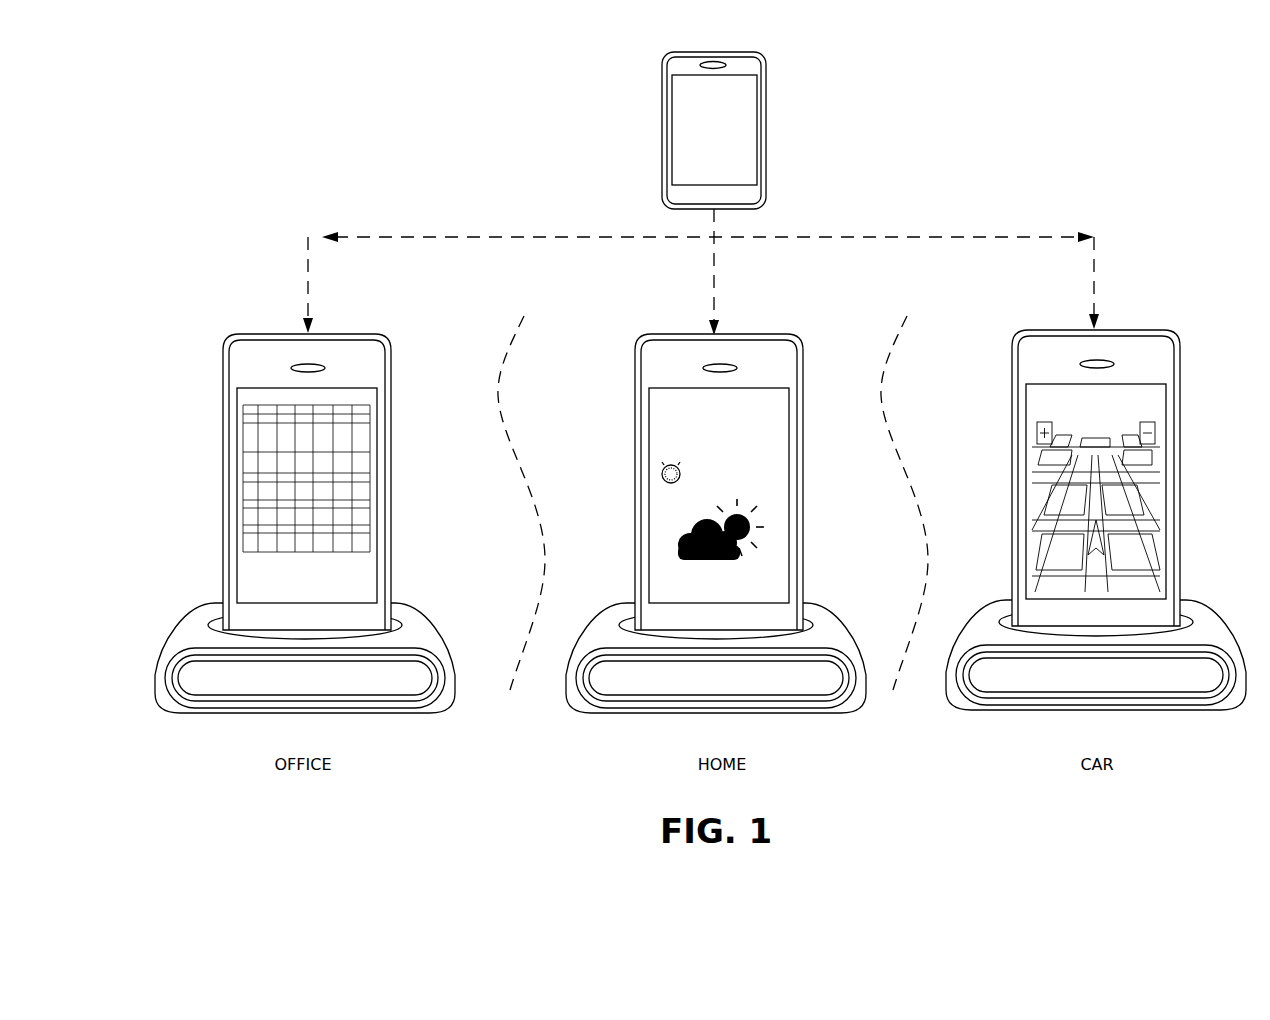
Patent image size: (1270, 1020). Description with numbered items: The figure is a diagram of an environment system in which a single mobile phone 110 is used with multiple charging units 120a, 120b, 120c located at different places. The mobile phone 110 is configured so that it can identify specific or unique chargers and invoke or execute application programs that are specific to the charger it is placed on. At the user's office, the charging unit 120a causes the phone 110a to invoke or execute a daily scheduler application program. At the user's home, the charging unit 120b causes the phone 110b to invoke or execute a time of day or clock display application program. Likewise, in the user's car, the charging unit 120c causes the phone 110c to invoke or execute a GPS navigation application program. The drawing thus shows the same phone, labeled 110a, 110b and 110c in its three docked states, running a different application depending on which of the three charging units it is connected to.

The mobile phone 110 is at (757, 53).
The phone 110a is at (362, 334).
The phone 110b is at (765, 334).
The phone 110c is at (1122, 330).
The charging unit 120a is at (385, 712).
The charging unit 120b is at (798, 715).
The charging unit 120c is at (1168, 710).